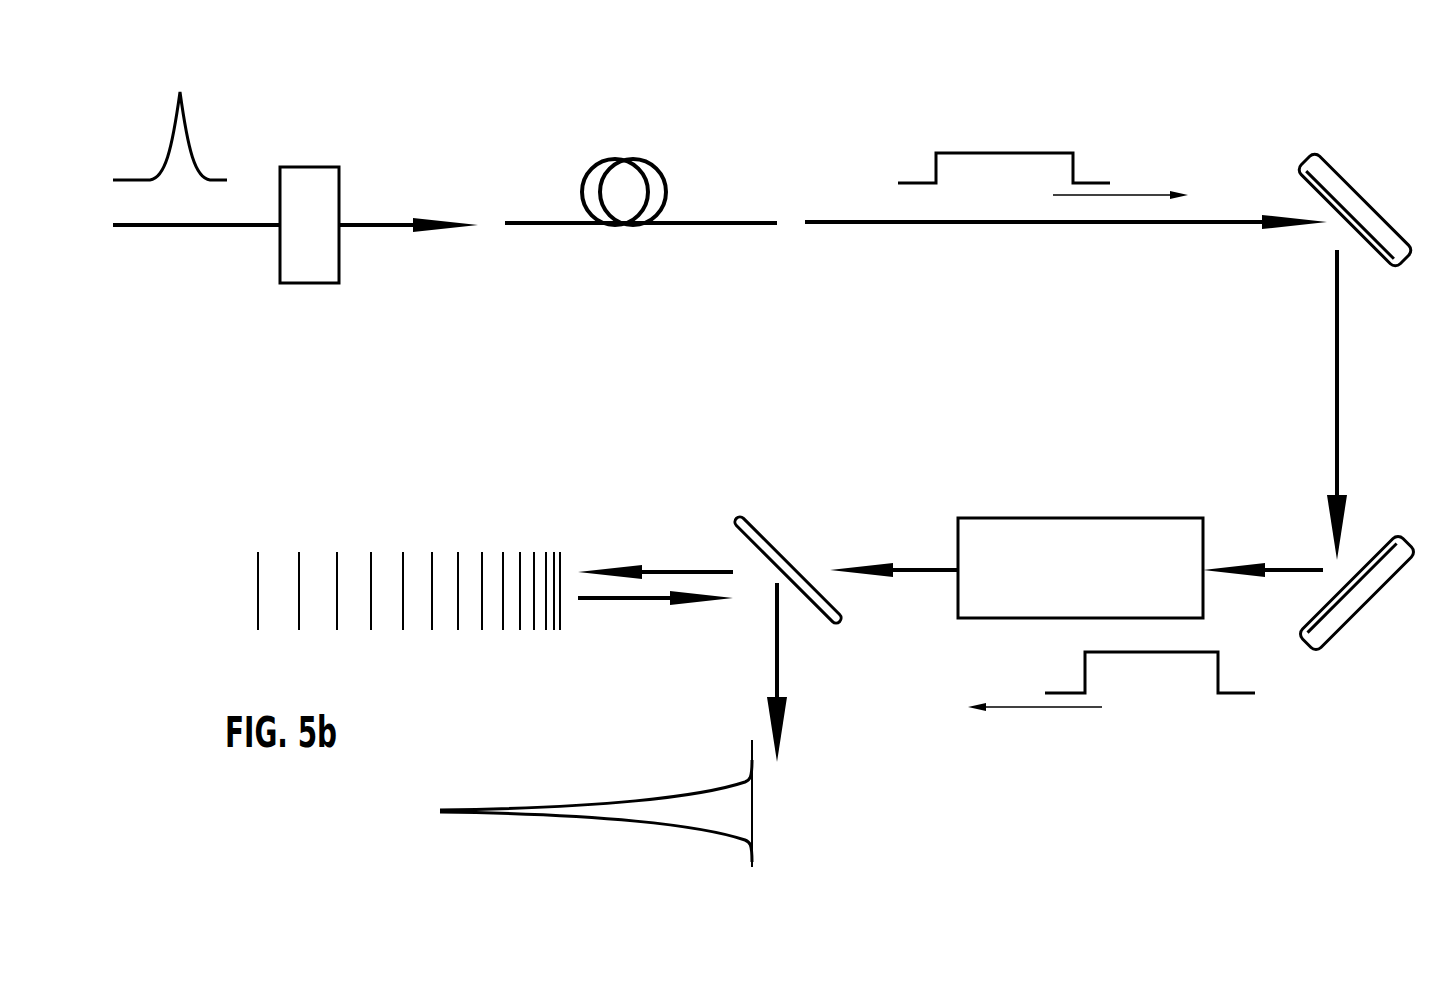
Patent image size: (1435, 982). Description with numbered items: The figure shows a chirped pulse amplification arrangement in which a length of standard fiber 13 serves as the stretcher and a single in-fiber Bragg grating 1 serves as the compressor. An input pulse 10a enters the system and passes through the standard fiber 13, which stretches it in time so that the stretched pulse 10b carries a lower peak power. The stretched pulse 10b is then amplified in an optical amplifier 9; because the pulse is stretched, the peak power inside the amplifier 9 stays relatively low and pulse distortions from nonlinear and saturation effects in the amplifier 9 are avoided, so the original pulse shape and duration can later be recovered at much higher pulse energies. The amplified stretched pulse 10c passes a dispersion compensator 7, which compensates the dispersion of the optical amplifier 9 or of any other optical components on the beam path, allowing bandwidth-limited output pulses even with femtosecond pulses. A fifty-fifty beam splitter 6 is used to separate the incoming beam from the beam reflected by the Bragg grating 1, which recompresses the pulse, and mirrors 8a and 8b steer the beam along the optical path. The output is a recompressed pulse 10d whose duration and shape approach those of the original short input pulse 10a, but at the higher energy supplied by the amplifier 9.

The Bragg grating 1 is at (408, 528).
The beam splitter 6 is at (760, 530).
The dispersion compensator 7 is at (320, 170).
The mirror 8a is at (1365, 197).
The mirror 8b is at (1372, 600).
The optical amplifier 9 is at (1032, 517).
The input pulse 10a is at (184, 112).
The stretched pulse 10b is at (1073, 152).
The stretched pulse 10c is at (1235, 694).
The recompressed pulse 10d is at (557, 816).
The standard fiber 13 is at (660, 165).